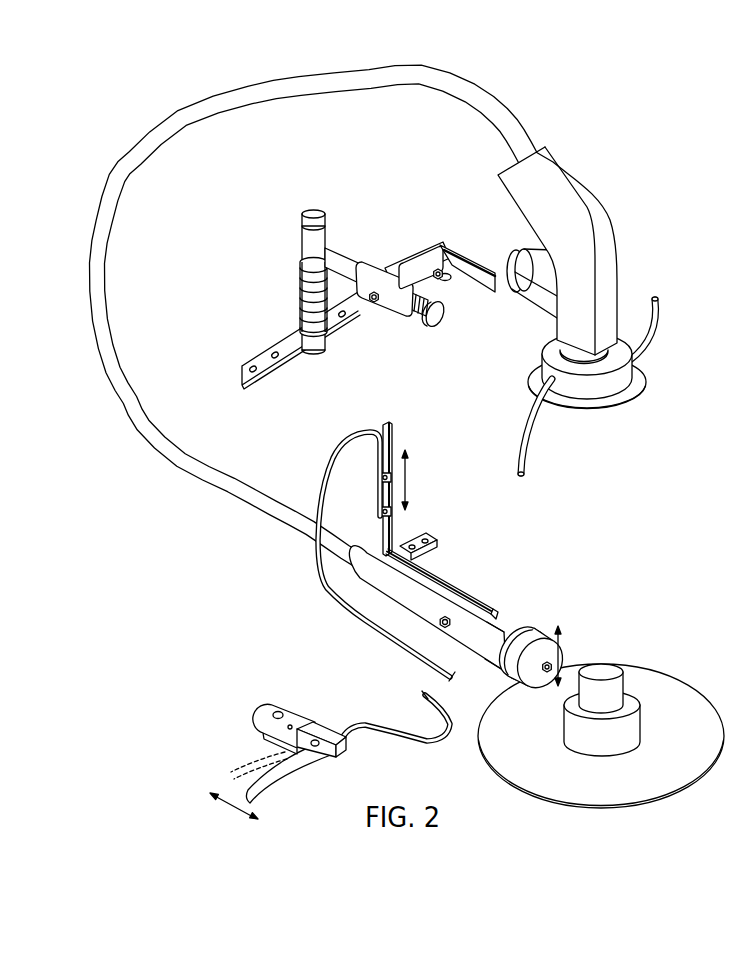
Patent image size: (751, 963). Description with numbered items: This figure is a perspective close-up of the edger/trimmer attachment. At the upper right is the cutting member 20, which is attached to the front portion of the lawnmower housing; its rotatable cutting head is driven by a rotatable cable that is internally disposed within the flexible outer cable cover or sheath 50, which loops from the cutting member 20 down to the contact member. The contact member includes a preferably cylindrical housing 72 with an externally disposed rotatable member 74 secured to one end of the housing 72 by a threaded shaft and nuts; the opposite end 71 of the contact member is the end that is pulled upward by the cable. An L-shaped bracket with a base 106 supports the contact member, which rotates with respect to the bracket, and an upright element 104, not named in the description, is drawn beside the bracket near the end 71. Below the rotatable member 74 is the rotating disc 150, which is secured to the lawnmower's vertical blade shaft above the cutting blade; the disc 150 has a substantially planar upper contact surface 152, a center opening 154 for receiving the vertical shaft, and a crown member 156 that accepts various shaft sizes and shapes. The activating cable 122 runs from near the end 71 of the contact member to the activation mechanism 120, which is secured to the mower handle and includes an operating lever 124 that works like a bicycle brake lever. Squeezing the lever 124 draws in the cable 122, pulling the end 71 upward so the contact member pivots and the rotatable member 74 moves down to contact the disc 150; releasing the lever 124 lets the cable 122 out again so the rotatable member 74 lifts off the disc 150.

The flexible outer cable cover or sheath 50 is at (290, 78).
The cutting member 20 is at (635, 277).
The adjustable post 104 is at (393, 428).
The end of contact member 71 is at (370, 555).
The base 106 is at (494, 604).
The housing 72 is at (506, 630).
The rotatable member 74 is at (536, 636).
The rotating disc 150 is at (601, 711).
The upper contact surface 152 is at (637, 792).
The center opening 154 is at (603, 668).
The crown member 156 is at (640, 690).
The cable 122 is at (323, 598).
The activation mechanism 120 is at (225, 718).
The operating lever 124 is at (286, 774).